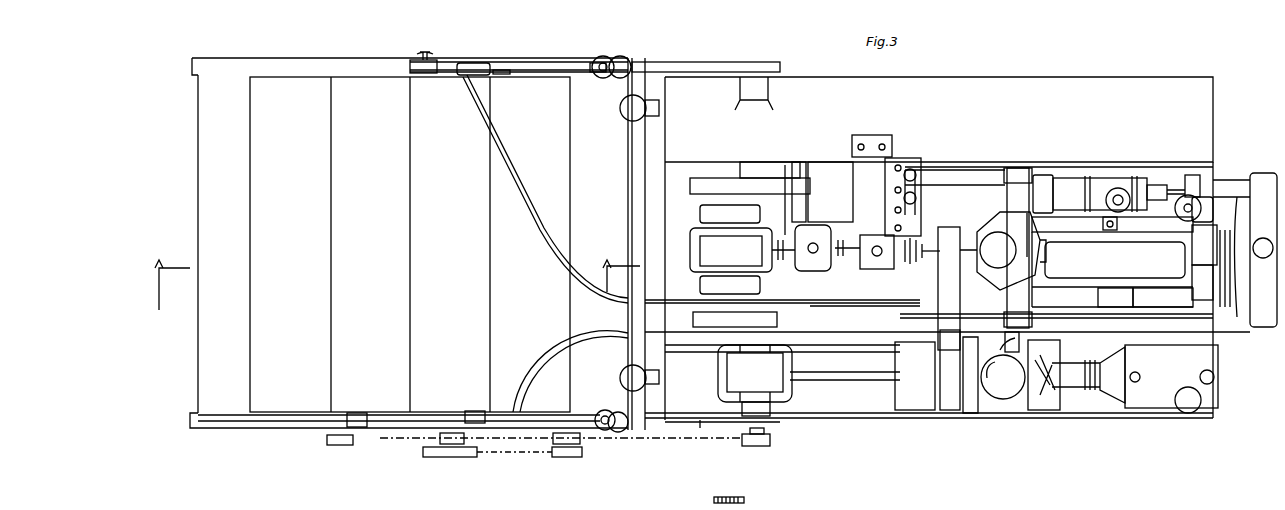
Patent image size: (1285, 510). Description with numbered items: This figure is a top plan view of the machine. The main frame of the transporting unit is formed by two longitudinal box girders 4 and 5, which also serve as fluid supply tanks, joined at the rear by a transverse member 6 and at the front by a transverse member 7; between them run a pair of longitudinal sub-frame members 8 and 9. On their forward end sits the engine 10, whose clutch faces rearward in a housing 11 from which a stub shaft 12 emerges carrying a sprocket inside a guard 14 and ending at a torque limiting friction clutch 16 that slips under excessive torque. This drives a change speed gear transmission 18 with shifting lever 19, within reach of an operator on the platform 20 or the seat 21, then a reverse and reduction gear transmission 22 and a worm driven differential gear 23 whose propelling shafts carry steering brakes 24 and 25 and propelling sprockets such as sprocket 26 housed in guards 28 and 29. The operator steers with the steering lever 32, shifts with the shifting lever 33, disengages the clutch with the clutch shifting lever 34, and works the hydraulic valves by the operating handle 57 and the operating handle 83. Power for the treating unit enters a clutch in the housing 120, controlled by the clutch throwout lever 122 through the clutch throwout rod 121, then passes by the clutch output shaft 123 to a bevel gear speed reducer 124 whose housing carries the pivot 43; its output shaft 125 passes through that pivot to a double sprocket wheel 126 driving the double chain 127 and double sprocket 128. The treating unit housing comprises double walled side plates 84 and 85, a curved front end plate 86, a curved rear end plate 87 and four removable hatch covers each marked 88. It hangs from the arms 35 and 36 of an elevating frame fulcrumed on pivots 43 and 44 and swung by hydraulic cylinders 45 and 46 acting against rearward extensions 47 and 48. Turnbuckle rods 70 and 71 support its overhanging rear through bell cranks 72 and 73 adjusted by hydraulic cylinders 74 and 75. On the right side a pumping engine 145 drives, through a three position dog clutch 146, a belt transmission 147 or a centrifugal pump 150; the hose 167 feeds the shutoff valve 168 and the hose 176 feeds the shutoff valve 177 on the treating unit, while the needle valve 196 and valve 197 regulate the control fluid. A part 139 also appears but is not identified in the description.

The side plate 85 is at (192, 62).
The curved end plate 87 is at (198, 182).
The side plate 84 is at (190, 420).
The removable hatch cover 88 is at (445, 67).
The hydraulically operated shutoff valve 168 is at (425, 52).
The turnbuckle rod 71 is at (520, 64).
The turnbuckle rod 70 is at (420, 414).
The hydraulically controlled shut off valve 177 is at (472, 410).
The hydraulic cylinder 75 is at (610, 55).
The bell crank 73 is at (600, 78).
The bell crank 72 is at (603, 410).
The hydraulic cylinder 74 is at (612, 433).
The hydraulic cylinder 46 is at (620, 115).
The rearward extension 48 is at (660, 104).
The hydraulic cylinder 45 is at (620, 372).
The rearward extension 47 is at (660, 372).
The hose 167 is at (545, 240).
The curved end plate 86 is at (585, 160).
The hose 176 is at (560, 360).
The double chain 127 is at (640, 446).
The double sprocket 128 is at (553, 440).
The gear shaft 139 is at (495, 455).
The arm 36 is at (700, 62).
The pivot 44 is at (755, 72).
The box girder 5 is at (1226, 130).
The arm 35 is at (685, 410).
The transverse member 7 is at (1200, 337).
The sub-frame member 8 is at (852, 318).
The guard 28 is at (708, 178).
The steering brake 24 is at (700, 213).
The worm driven differential gear 23 is at (705, 245).
The steering brake 25 is at (700, 282).
The guard 29 is at (700, 321).
The transverse member 6 is at (783, 195).
The seat 21 is at (815, 165).
The platform 20 is at (858, 170).
The selective reverse and reduction gear transmission 22 is at (816, 228).
The hand operated needle valve 196 is at (860, 140).
The valve 197 is at (884, 140).
The steering lever 32 is at (898, 160).
The operating handle 57 is at (912, 168).
The clutch shifting lever 34 is at (895, 182).
The operating handle 83 is at (903, 196).
The shifting lever 33 is at (895, 208).
The clutch throwout lever 122 is at (895, 226).
The change speed gear transmission 18 is at (866, 270).
The shifting lever 19 is at (878, 260).
The stub shaft 12 is at (930, 240).
The torque limiting friction clutch 16 is at (924, 262).
The guard 14 is at (950, 228).
The housing 11 is at (1000, 222).
The sub-frame member 9 is at (975, 175).
The engine 10 is at (1068, 200).
The box girder 4 is at (1165, 340).
The engine 145 is at (1165, 405).
The belt transmission 147 is at (1095, 405).
The three position selective dog clutch 146 is at (1040, 408).
The centrifugal pump 150 is at (1005, 398).
The housing 120 is at (915, 400).
The clutch throwout rod 121 is at (905, 325).
The clutch output shaft 123 is at (840, 368).
The bevel gear speed reducer 124 is at (775, 385).
The pivot 43 is at (770, 412).
The output shaft 125 is at (770, 436).
The double sprocket wheel 126 is at (770, 446).
The propelling sprocket 26 is at (745, 500).